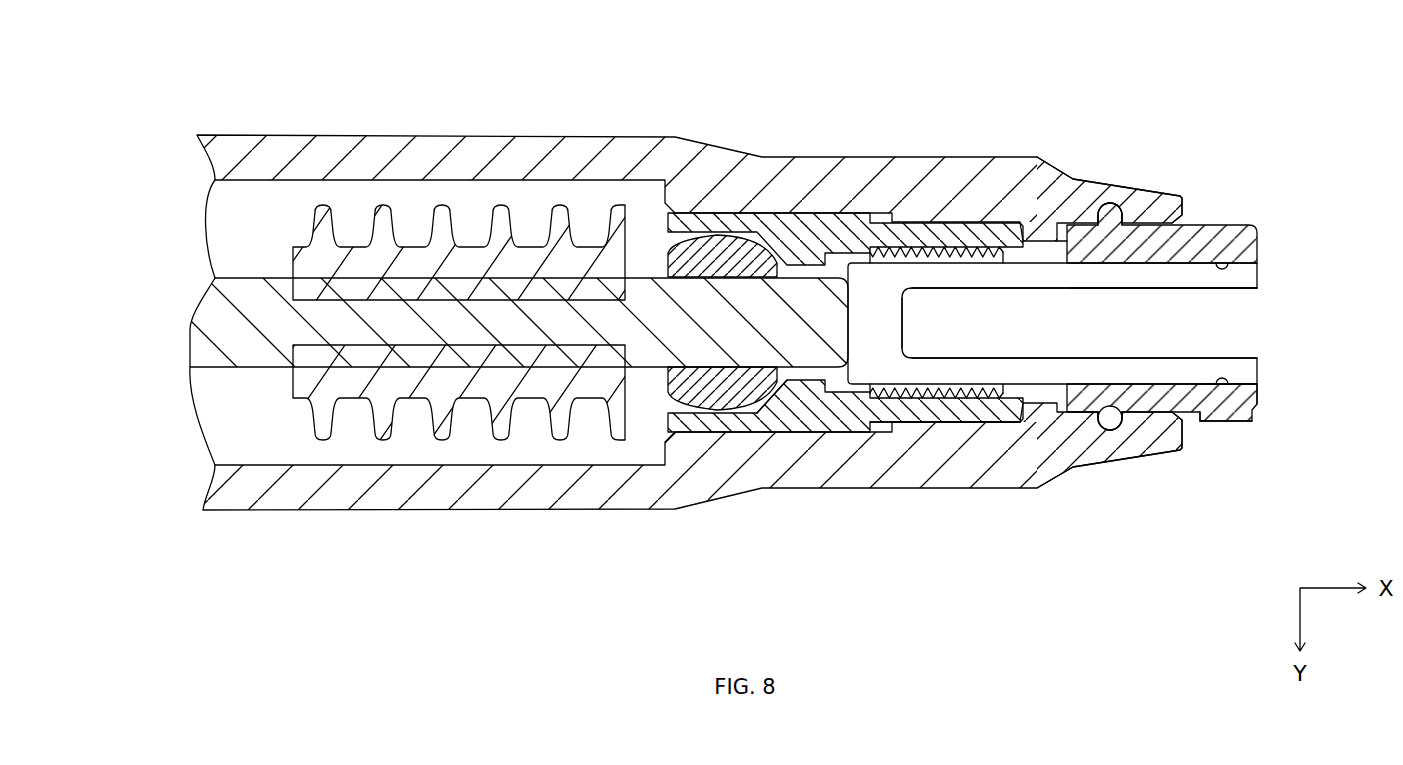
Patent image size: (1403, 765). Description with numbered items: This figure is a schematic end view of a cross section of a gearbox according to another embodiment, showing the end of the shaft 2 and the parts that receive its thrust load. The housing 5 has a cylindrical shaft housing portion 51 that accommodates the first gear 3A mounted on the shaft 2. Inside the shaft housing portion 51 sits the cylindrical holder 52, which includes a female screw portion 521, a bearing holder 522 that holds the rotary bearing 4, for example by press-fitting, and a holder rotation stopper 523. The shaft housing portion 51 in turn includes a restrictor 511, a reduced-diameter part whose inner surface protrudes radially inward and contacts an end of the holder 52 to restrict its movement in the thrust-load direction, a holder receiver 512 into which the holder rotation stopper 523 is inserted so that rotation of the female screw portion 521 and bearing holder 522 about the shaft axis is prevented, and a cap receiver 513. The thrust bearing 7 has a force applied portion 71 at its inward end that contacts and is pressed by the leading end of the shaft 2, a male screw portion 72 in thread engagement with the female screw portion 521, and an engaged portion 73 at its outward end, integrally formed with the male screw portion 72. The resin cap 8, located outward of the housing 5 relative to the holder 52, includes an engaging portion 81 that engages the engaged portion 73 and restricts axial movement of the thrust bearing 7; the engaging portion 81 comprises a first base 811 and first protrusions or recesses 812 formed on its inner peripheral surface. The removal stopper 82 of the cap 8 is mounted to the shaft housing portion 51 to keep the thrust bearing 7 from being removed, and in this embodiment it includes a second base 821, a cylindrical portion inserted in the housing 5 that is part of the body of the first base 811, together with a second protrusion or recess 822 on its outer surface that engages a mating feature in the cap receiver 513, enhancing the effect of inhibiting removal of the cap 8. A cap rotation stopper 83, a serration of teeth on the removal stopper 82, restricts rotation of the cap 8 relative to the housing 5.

The shaft 2 is at (215, 320).
The first gear 3A is at (423, 263).
The rotary bearing 4 is at (722, 240).
The housing 5 is at (243, 127).
The shaft housing portion 51 is at (424, 520).
The holder 52 is at (789, 441).
The female screw portion 521 is at (955, 410).
The bearing holder 522 is at (730, 420).
The holder rotation stopper 523 is at (988, 405).
The thrust bearing 7 is at (1035, 250).
The force applied portion 71 is at (858, 277).
The male screw portion 72 is at (912, 267).
The engaged portion 73 is at (1237, 276).
The restrictor 511 is at (1052, 387).
The holder receiver 512 is at (953, 392).
The cap receiver 513 is at (1156, 391).
The cap 8 is at (1238, 216).
The engaging portion 81 is at (1247, 413).
The first base 811 is at (1213, 414).
The first protrusions or recesses 812 is at (1198, 412).
The removal stopper 82 is at (1138, 414).
The second base 821 is at (1080, 405).
The second protrusion or recess 822 is at (1110, 430).
The cap rotation stopper 83 is at (1102, 225).